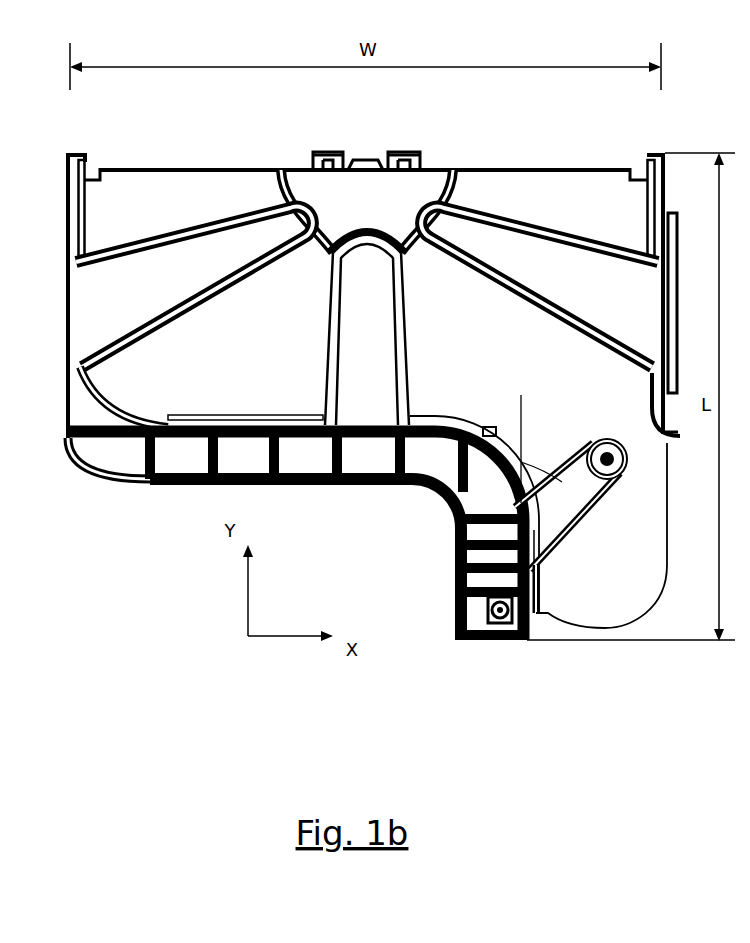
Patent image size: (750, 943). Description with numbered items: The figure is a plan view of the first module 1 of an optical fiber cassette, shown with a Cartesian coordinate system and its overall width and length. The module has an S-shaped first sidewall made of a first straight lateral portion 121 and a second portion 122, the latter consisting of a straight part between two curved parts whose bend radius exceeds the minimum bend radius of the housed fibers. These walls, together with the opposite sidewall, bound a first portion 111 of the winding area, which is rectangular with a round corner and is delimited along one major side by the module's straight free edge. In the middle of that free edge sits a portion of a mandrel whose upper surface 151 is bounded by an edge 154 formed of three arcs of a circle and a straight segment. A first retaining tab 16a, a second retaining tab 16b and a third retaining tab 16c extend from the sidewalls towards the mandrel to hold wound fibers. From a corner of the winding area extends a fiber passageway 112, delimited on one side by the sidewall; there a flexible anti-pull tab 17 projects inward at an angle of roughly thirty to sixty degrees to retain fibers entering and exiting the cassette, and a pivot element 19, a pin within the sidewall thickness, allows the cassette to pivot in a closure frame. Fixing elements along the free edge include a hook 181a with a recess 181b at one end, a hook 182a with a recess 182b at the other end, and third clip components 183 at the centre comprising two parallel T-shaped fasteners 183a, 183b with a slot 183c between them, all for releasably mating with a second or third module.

The first module 1 is at (383, 519).
The first retaining tab 16a is at (194, 317).
The second retaining tab 16b is at (539, 287).
The third retaining tab 16c is at (367, 328).
The anti-pull tab 17 is at (557, 498).
The pivot element 19 is at (499, 630).
The first portion of the winding area 111 is at (245, 380).
The fiber passageway 112 is at (601, 535).
The first straight lateral portion 121 is at (67, 228).
The second portion 122 is at (182, 486).
The upper surface 151 is at (336, 211).
The edge 154 is at (454, 180).
The hook 181a is at (65, 153).
The recess 181b is at (88, 176).
The hook 182a is at (664, 153).
The recess 182b is at (647, 180).
The third clip components 183 is at (292, 140).
The fastener 183a is at (327, 150).
The fastener 183b is at (413, 150).
The slot 183c is at (365, 160).